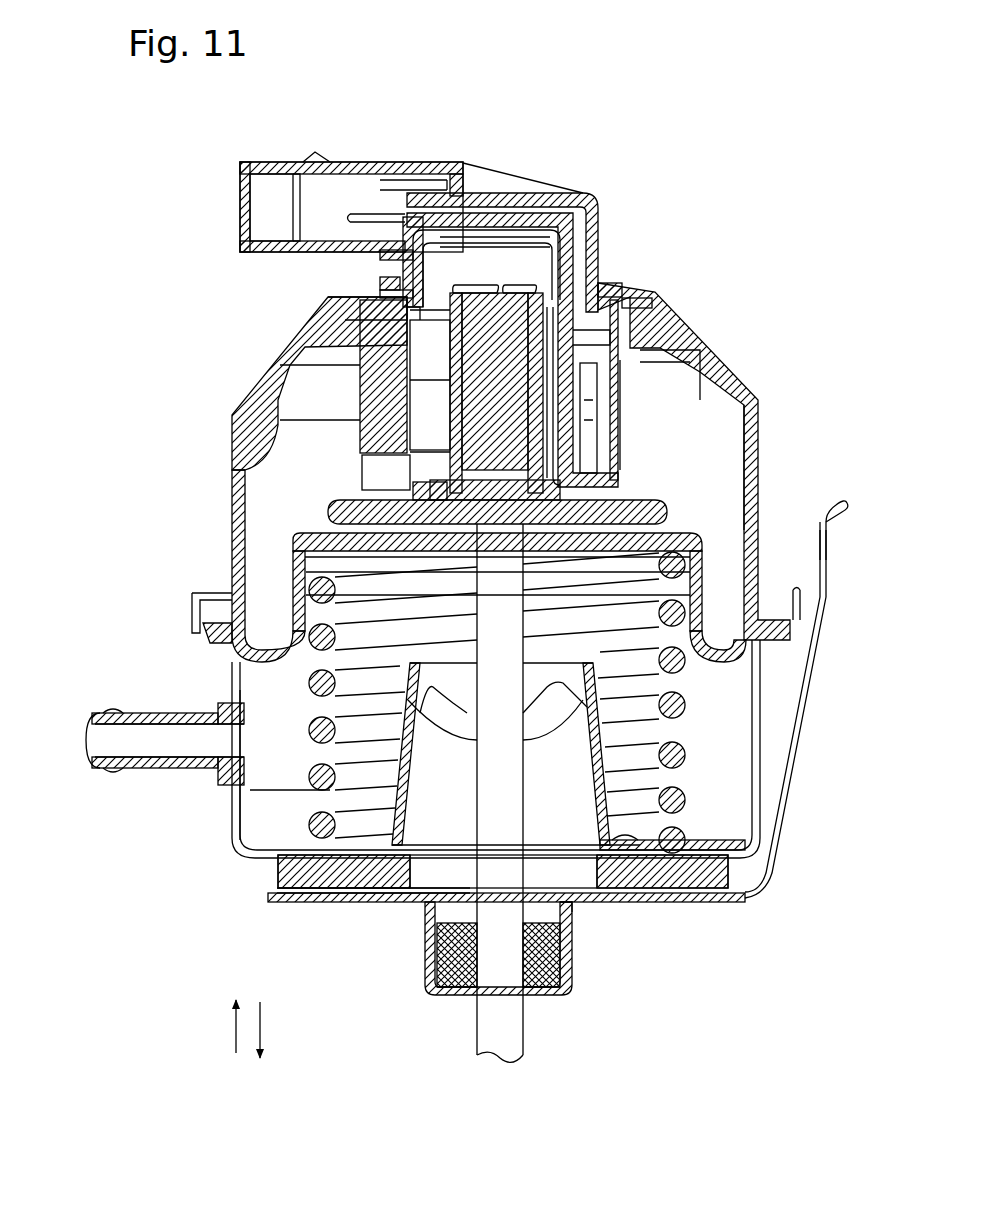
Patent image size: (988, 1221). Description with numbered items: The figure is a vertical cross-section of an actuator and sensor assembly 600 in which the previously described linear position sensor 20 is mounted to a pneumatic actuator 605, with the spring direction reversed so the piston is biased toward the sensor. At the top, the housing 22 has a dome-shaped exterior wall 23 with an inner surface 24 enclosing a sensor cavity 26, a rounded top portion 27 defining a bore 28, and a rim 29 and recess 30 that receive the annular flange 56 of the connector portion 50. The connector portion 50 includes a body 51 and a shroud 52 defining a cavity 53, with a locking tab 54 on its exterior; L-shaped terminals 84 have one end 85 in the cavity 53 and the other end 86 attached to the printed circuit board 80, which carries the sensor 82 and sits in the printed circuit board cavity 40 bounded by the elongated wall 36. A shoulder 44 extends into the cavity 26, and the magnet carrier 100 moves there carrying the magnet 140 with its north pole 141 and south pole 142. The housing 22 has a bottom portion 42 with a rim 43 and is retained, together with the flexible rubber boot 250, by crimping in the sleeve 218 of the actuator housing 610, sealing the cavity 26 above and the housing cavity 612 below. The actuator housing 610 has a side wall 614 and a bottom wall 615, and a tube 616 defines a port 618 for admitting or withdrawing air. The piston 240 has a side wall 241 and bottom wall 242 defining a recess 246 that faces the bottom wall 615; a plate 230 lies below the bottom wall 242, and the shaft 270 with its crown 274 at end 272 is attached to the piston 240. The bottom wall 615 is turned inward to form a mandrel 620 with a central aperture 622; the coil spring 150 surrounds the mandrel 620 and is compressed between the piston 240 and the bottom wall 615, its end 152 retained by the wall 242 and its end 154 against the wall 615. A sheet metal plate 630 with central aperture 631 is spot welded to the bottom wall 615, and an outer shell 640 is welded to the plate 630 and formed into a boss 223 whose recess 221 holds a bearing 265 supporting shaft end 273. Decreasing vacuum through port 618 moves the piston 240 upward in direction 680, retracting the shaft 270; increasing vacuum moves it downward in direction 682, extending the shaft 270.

The actuator and sensor assembly 600 is at (680, 150).
The shroud 52 is at (262, 165).
The cavity 53 is at (270, 215).
The locking tab 54 is at (315, 160).
The terminal end 85 is at (348, 218).
The connector portion 50 is at (450, 160).
The body 51 is at (420, 182).
The linear position sensor 20 is at (604, 240).
The terminals 84 is at (600, 222).
The bore 28 is at (492, 270).
The top portion 27 is at (530, 212).
The annular flange 56 is at (606, 290).
The rim 29 is at (375, 278).
The recess 30 is at (350, 322).
The housing 22 is at (240, 412).
The shoulder 44 is at (372, 380).
The south pole 142 is at (462, 440).
The sensor cavity 26 is at (250, 505).
The elongated wall 36 is at (600, 382).
The sensor 82 is at (592, 448).
The printed circuit board 80 is at (597, 430).
The magnet 140 is at (600, 415).
The terminal end 86 is at (640, 335).
The north pole 141 is at (650, 300).
The printed circuit board cavity 40 is at (612, 412).
The crown 274 is at (518, 500).
The magnet carrier 100 is at (675, 500).
The spring end 152 is at (320, 546).
The inner surface 24 is at (300, 560).
The piston 240 is at (290, 680).
The bottom wall 242 is at (704, 560).
The exterior wall 23 is at (310, 520).
The recess 246 is at (305, 575).
The side wall 241 is at (305, 592).
The shaft end 272 is at (702, 578).
The rim 43 is at (205, 632).
The bottom portion 42 is at (212, 642).
The sleeve 218 is at (228, 610).
The coil spring 150 is at (688, 765).
The flexible rubber boot 250 is at (733, 664).
The central aperture 622 is at (522, 718).
The spring end 154 is at (690, 830).
The actuator housing 610 is at (235, 848).
The pneumatic actuator 605 is at (238, 822).
The housing cavity 612 is at (275, 796).
The side wall 614 is at (232, 770).
The tube 616 is at (108, 716).
The port 618 is at (118, 745).
The shaft 270 is at (492, 1035).
The shaft end 273 is at (518, 1050).
The bottom wall 615 is at (390, 870).
The central aperture 631 is at (405, 888).
The sheet metal plate 630 is at (415, 900).
The outer shell 640 is at (782, 885).
The recess 221 is at (572, 938).
The boss 223 is at (432, 952).
The bearing 265 is at (435, 983).
The mandrel 620 is at (560, 913).
The direction 680 is at (230, 1050).
The direction 682 is at (265, 1032).
The plate 230 is at (836, 520).